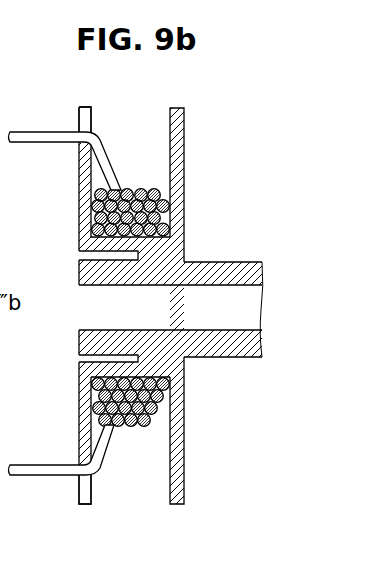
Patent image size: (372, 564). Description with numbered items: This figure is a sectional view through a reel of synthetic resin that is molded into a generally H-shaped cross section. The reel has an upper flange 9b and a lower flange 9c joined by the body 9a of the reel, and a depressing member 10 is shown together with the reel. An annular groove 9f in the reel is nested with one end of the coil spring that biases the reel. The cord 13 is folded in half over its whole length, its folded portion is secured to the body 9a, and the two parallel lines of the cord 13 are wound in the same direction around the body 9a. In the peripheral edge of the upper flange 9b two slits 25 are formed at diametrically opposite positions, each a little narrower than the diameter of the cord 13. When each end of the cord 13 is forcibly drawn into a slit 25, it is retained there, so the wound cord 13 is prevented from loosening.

The body of the reel 9a is at (147, 343).
The upper flange 9b is at (79, 178).
The lower flange 9c is at (184, 154).
The annular groove 9f is at (93, 255).
The depressing member 10 is at (232, 278).
The cord 13 is at (43, 140).
The slit 25 is at (88, 118).